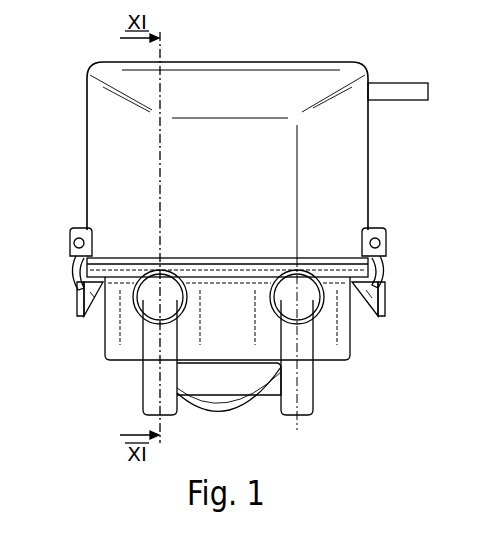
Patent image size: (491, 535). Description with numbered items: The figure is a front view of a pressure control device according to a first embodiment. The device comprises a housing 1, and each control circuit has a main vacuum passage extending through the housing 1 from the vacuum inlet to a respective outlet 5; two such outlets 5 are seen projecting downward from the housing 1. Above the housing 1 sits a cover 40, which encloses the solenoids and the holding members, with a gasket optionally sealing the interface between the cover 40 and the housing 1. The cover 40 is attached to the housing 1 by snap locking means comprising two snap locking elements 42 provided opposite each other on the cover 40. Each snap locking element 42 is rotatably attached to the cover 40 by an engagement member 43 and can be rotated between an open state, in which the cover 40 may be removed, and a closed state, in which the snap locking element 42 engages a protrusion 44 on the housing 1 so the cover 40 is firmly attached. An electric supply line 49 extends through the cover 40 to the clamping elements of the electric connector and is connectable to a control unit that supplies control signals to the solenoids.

The housing 1 is at (343, 331).
The outlet 5 is at (148, 385).
The cover 40 is at (357, 170).
The snap locking element 42 is at (78, 268).
The engagement member 43 is at (72, 232).
The protrusion 44 is at (78, 284).
The electric supply line 49 is at (393, 86).